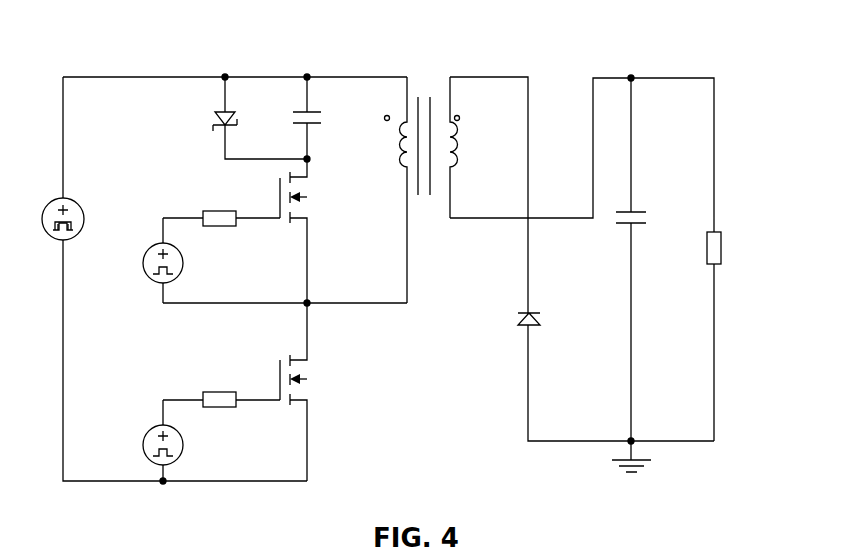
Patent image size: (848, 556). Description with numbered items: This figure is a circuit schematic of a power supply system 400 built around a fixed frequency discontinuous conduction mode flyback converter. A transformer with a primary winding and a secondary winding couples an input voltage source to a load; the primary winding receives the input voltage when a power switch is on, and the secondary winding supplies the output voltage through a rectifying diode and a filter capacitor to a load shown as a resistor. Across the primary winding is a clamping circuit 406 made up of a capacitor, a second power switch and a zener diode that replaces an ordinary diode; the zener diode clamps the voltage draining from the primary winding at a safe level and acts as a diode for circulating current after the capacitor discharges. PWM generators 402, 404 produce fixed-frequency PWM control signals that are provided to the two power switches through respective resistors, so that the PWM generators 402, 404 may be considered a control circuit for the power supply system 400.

The power supply system 400 is at (142, 42).
The PWM generator 402 is at (143, 445).
The PWM generator 404 is at (143, 266).
The clamping circuit 406 is at (218, 197).